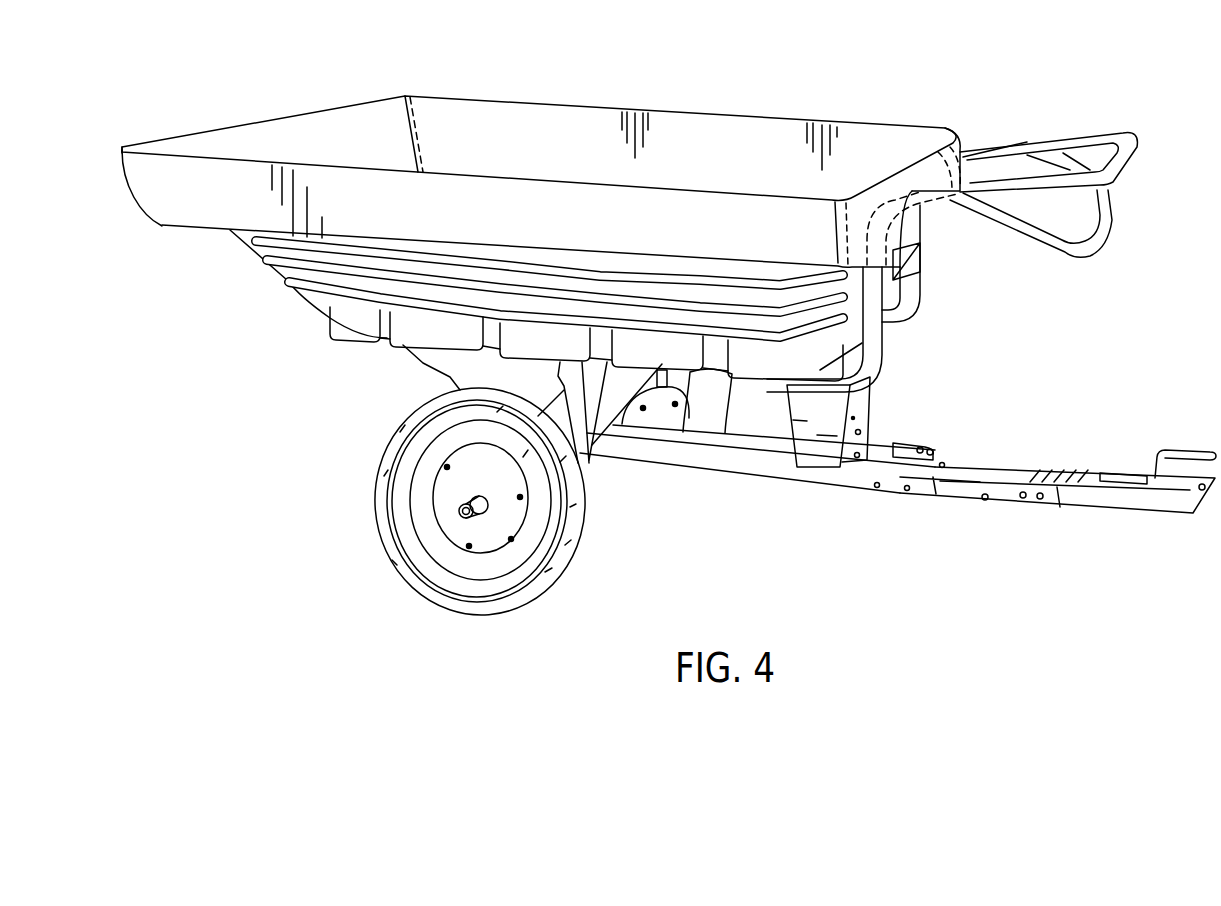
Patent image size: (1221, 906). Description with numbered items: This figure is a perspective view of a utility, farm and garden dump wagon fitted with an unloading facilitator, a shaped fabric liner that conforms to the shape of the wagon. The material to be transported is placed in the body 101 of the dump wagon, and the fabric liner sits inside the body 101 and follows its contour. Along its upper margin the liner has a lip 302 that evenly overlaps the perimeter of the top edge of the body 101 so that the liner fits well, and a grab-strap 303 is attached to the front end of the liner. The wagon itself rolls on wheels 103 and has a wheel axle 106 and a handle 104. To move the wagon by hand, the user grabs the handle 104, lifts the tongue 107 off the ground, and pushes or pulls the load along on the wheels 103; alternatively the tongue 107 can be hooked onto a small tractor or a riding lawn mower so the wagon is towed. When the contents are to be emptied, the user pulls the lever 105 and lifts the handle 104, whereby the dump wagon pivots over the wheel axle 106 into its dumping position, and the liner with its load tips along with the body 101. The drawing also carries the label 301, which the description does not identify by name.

The body 101 is at (305, 290).
The wheels 103 is at (453, 585).
The handle 104 is at (1070, 142).
The lever 105 is at (900, 442).
The wheel axle 106 is at (460, 511).
The tongue 107 is at (1133, 502).
The cargo bin 301 is at (578, 135).
The lip 302 is at (200, 213).
The grab-strap 303 is at (1038, 231).